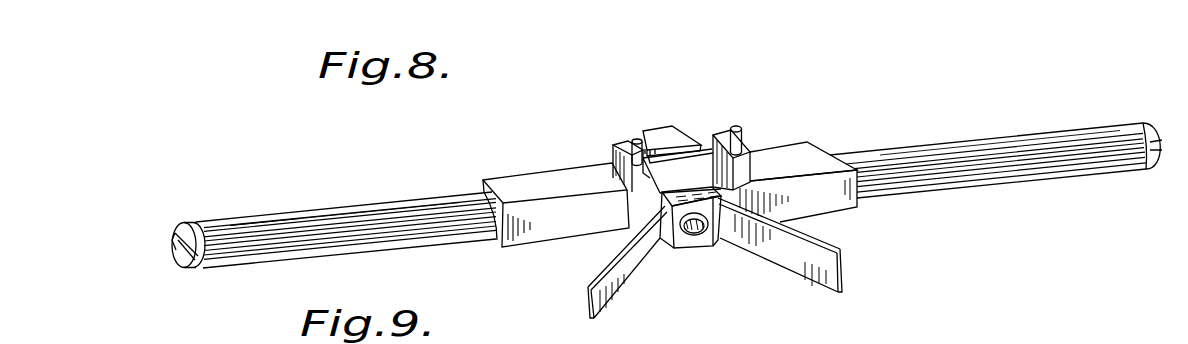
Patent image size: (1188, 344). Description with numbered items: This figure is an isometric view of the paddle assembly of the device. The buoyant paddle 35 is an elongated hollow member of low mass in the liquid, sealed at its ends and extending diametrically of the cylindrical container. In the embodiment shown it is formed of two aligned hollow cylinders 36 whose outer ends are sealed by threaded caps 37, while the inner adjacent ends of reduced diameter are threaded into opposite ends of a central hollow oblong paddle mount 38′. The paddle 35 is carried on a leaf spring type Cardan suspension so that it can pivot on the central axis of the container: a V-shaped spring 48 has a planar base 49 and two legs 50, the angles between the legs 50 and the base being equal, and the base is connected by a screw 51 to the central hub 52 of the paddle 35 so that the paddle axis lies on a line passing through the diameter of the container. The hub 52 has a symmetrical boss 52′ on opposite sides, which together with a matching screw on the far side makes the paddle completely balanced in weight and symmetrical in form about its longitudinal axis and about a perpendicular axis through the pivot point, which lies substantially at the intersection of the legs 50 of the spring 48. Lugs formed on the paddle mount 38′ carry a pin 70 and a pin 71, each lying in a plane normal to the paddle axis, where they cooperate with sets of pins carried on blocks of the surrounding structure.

The buoyant paddle 35 is at (286, 199).
The hollow cylinders 36 is at (381, 219).
The threaded caps 37 is at (176, 236).
The paddle mount 38′ is at (545, 182).
The V-shaped spring 48 is at (623, 268).
The planar base 49 is at (690, 203).
The legs 50 is at (590, 280).
The screw 51 is at (688, 248).
The central hub 52 is at (700, 158).
The symmetrical boss 52′ is at (698, 146).
The pin 70 is at (634, 139).
The pin 71 is at (748, 146).